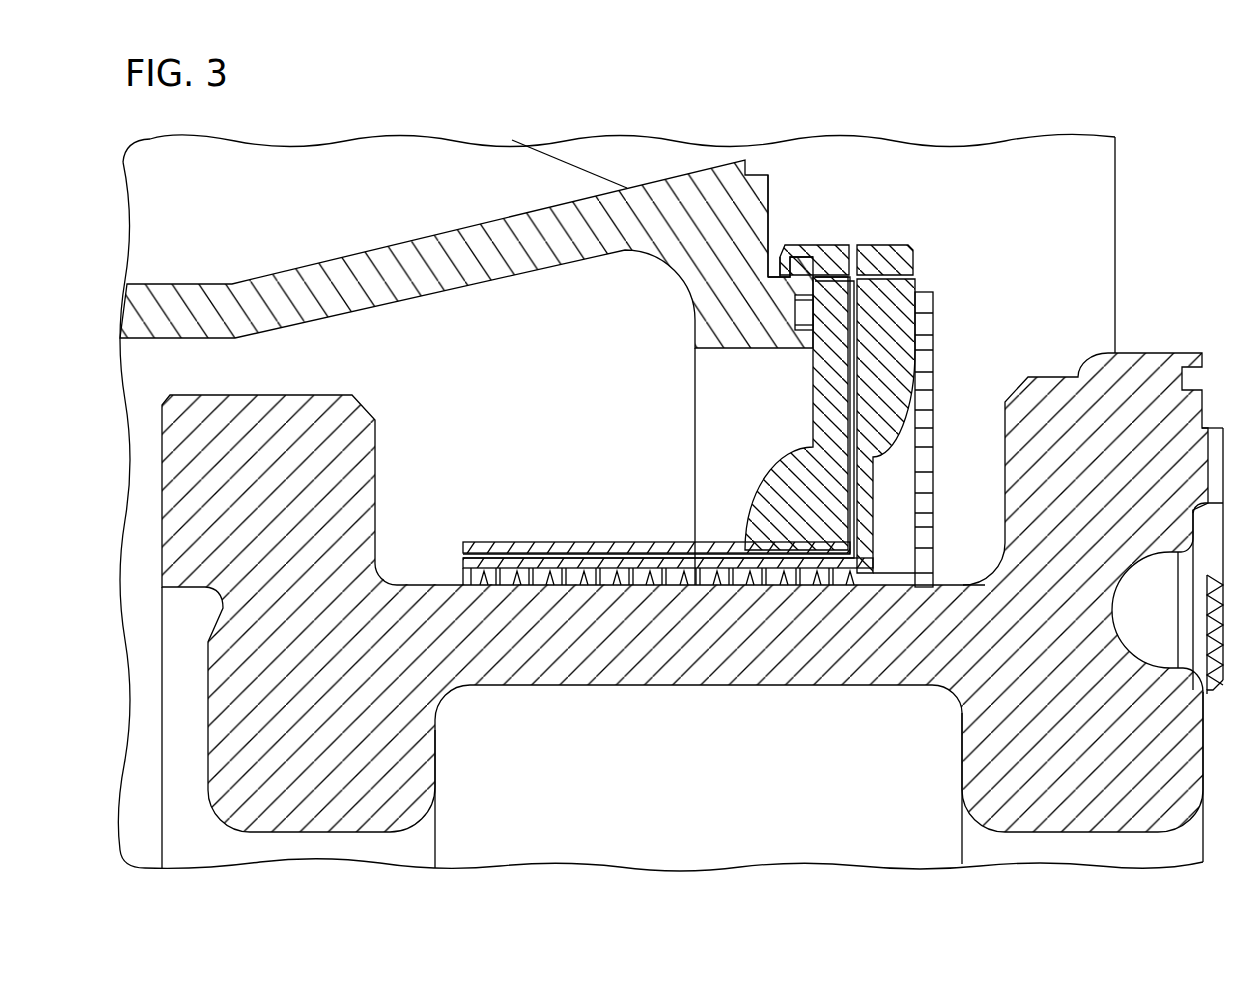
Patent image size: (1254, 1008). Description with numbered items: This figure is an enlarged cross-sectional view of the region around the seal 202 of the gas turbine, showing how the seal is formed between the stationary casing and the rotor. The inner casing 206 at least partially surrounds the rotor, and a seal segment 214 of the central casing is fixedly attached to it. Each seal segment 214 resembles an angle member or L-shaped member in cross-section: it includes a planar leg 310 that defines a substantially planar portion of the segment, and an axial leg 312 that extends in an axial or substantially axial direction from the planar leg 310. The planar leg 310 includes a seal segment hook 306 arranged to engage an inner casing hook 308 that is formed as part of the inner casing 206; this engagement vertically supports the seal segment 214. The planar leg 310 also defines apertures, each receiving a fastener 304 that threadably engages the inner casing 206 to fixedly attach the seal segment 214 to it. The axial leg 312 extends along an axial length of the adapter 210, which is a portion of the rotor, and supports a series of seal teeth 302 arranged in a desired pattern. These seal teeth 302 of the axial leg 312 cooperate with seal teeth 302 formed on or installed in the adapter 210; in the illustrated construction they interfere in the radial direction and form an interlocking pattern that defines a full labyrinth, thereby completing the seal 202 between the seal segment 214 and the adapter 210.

The seal 202 is at (527, 592).
The inner casing 206 is at (355, 270).
The adapter 210 is at (1050, 669).
The seal segment 214 is at (889, 262).
The seal teeth 302 is at (651, 587).
The fastener 304 is at (934, 318).
The seal segment hook 306 is at (813, 258).
The inner casing hook 308 is at (772, 277).
The planar leg 310 is at (828, 405).
The axial leg 312 is at (546, 545).